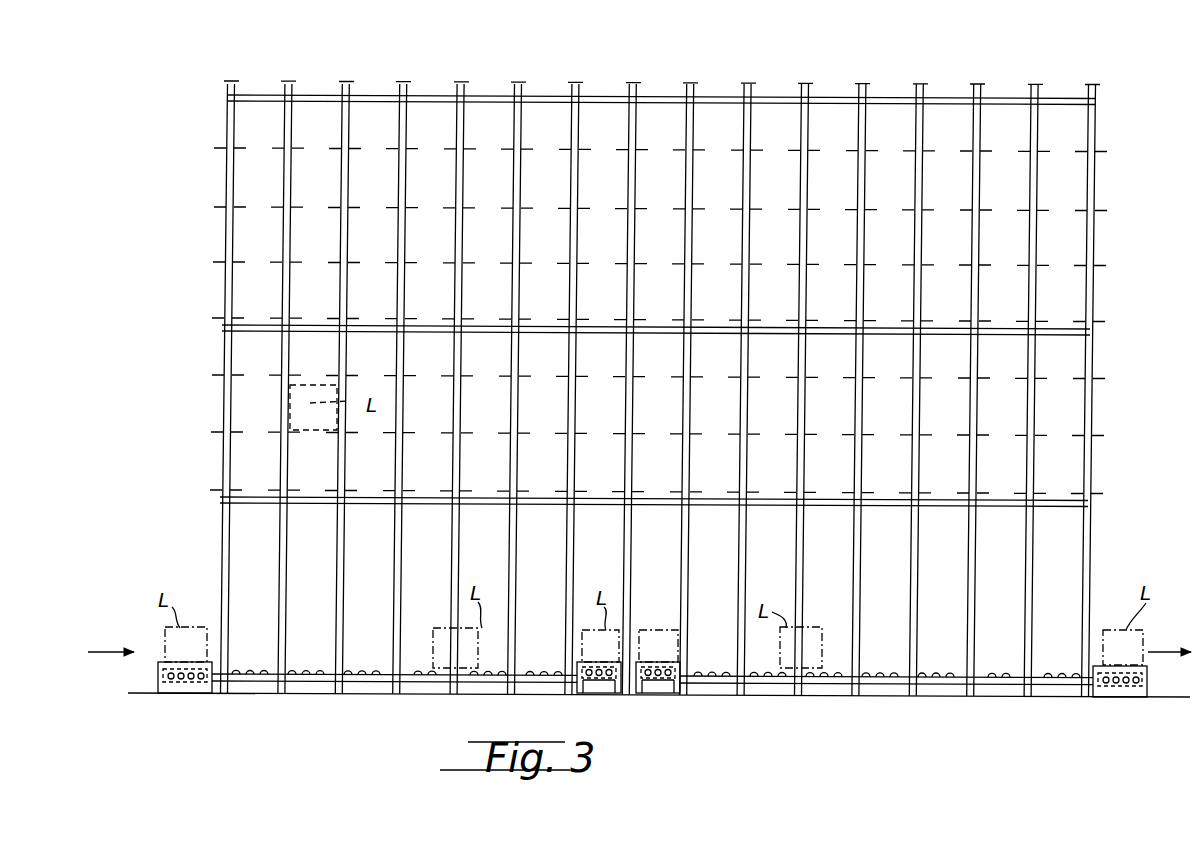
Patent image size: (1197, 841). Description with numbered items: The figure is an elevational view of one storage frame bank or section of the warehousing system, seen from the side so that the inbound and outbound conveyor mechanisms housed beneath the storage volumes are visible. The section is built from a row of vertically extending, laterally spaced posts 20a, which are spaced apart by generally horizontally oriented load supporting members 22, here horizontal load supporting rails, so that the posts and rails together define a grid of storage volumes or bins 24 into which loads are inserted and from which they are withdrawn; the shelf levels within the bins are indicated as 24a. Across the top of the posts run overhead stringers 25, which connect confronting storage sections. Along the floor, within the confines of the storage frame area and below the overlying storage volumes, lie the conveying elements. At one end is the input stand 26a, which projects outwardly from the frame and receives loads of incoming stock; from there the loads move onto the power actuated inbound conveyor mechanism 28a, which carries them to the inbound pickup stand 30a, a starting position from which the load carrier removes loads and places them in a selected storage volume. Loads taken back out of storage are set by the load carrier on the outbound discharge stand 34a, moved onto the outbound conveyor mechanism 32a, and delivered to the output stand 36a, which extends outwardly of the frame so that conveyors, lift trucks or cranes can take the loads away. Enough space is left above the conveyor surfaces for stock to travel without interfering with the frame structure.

The post 20a is at (800, 90).
The load supporting member 22 is at (510, 318).
The storage volume 24 is at (430, 128).
The shelf 24a is at (258, 232).
The overhead stringer 25 is at (346, 80).
The input stand 26a is at (180, 688).
The inbound conveyor mechanism 28a is at (318, 683).
The inbound pickup stand 30a is at (597, 684).
The outbound conveyor mechanism 32a is at (1009, 687).
The outbound discharge stand 34a is at (655, 688).
The output stand 36a is at (1147, 680).